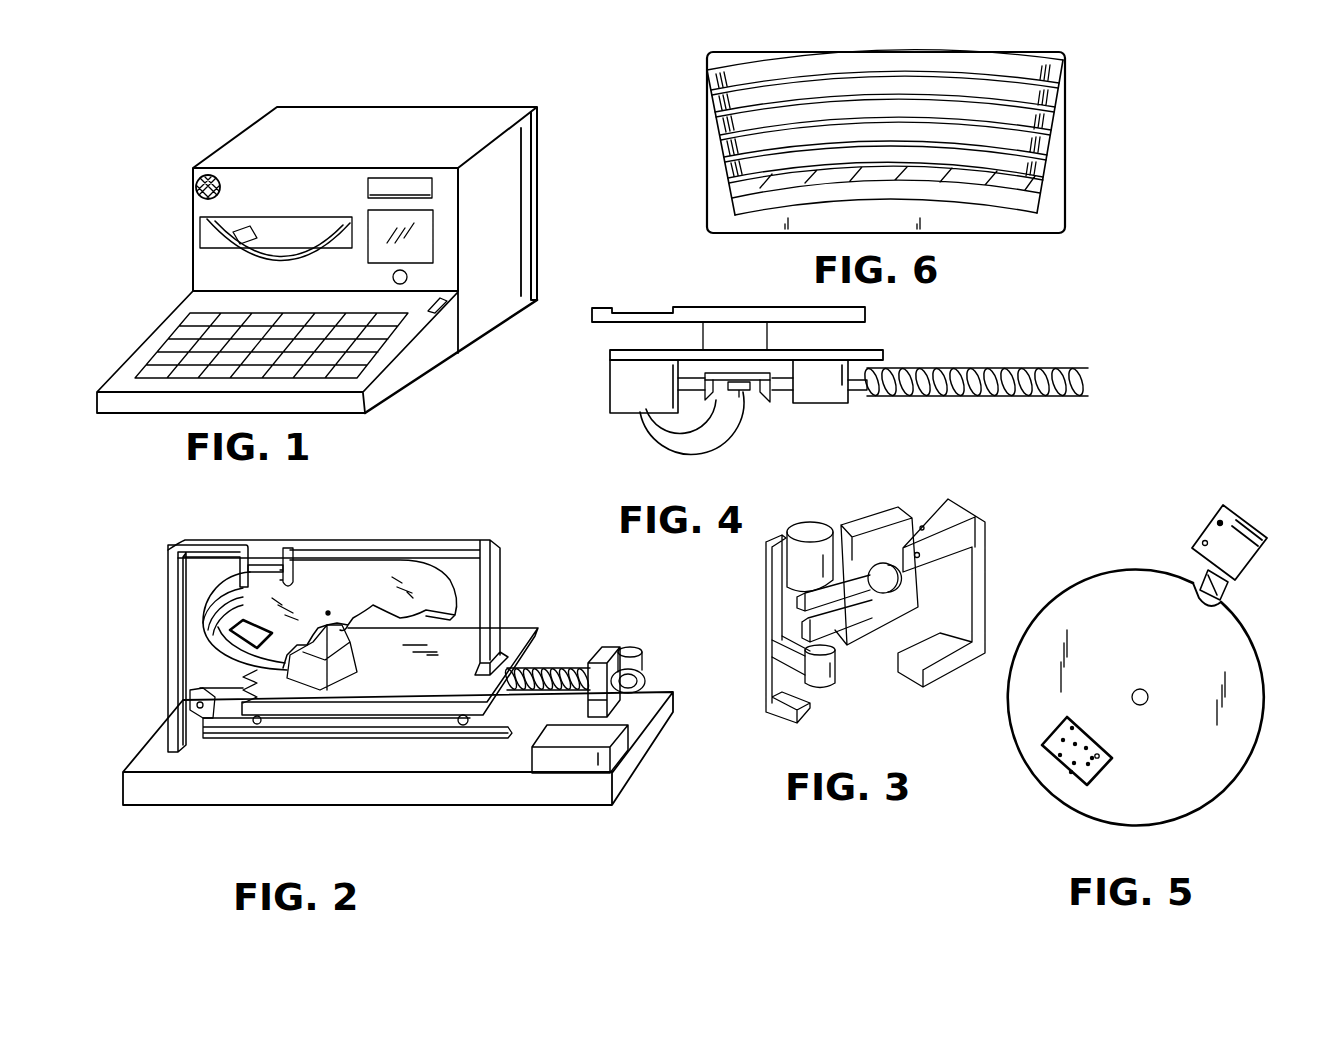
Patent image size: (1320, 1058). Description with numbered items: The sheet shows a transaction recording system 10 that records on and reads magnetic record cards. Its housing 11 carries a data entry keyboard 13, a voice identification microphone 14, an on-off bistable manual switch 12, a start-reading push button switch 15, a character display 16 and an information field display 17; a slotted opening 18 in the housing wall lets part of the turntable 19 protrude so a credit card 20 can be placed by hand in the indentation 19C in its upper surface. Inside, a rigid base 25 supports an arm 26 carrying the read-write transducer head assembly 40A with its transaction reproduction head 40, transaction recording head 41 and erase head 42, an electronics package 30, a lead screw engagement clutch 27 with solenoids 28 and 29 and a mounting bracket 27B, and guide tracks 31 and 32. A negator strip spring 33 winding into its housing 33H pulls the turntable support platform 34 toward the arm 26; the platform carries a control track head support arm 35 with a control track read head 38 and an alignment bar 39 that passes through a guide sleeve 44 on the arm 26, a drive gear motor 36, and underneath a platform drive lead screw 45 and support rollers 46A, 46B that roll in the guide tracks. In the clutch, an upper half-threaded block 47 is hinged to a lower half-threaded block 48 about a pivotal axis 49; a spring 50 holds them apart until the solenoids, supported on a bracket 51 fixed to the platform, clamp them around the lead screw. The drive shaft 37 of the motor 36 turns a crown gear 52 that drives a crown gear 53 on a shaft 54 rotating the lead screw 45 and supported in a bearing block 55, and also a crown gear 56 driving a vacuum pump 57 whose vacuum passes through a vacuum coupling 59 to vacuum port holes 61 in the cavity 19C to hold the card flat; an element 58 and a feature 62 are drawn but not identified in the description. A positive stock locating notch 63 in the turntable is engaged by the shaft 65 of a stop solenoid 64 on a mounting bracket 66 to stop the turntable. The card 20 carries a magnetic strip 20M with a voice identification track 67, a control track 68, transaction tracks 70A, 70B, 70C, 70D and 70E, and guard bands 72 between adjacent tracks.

In FIG. 1, the transaction recording system 10 is at (213, 123).
In FIG. 1, the housing 11 is at (523, 140).
In FIG. 1, the on-off bistable manual switch 12 is at (458, 297).
In FIG. 1, the data entry keyboard 13 is at (190, 337).
In FIG. 1, the voice identification input microphone 14 is at (202, 180).
In FIG. 1, the start-reading cycle push button operated switch 15 is at (408, 278).
In FIG. 1, the character display 16 is at (430, 188).
In FIG. 1, the information field display 17 is at (433, 243).
In FIG. 1, the slotted opening 18 is at (205, 223).
In FIG. 1, the turntable 19 is at (238, 240).
In FIG. 4, the turntable 19 is at (865, 313).
In FIG. 5, the turntable 19 is at (1223, 780).
In FIG. 2, the turntable 19 is at (227, 657).
In FIG. 5, the receptacle 19C is at (1073, 777).
In FIG. 2, the receptacle 19C is at (218, 650).
In FIG. 1, the credit card 20 is at (230, 240).
In FIG. 6, the credit card 20 is at (950, 223).
In FIG. 6, the magnetic coating or wide strip 20M is at (1065, 213).
In FIG. 2, the rigid base 25 is at (178, 783).
In FIG. 2, the arm 26 is at (172, 548).
In FIG. 2, the lead screw engagement clutch 27 is at (605, 650).
In FIG. 3, the mounting bracket 27B is at (983, 577).
In FIG. 2, the mounting bracket 27B is at (630, 713).
In FIG. 3, the solenoid 28 is at (805, 523).
In FIG. 2, the solenoid 28 is at (645, 657).
In FIG. 3, the solenoid 29 is at (833, 687).
In FIG. 2, the solenoid 29 is at (640, 695).
In FIG. 2, the electronics package 30 is at (592, 757).
In FIG. 2, the guide track 31 is at (393, 740).
In FIG. 2, the guide track 32 is at (540, 685).
In FIG. 2, the negator strip spring 33 is at (210, 712).
In FIG. 2, the housing 33H is at (200, 710).
In FIG. 4, the turntable support platform 34 is at (883, 355).
In FIG. 2, the turntable support platform 34 is at (523, 640).
In FIG. 2, the control track head support arm 35 is at (513, 538).
In FIG. 4, the drive gear motor 36 is at (717, 338).
In FIG. 2, the drive gear motor 36 is at (330, 673).
In FIG. 4, the drive shaft 37 is at (745, 370).
In FIG. 2, the drive shaft 37 is at (365, 577).
In FIG. 2, the control track read head 38 is at (288, 548).
In FIG. 2, the head support arm alignment bar 39 is at (265, 565).
In FIG. 2, the transaction reproduction head 40 is at (213, 592).
In FIG. 2, the read-write magnetic transducer head assembly 40A is at (210, 583).
In FIG. 2, the transaction recording head 41 is at (217, 602).
In FIG. 2, the erase head 42 is at (230, 645).
In FIG. 2, the guide sleeve 44 is at (245, 548).
In FIG. 4, the platform drive lead screw 45 is at (1060, 367).
In FIG. 2, the platform drive lead screw 45 is at (570, 668).
In FIG. 2, the support roller 46A is at (260, 724).
In FIG. 2, the support roller 46B is at (463, 727).
In FIG. 3, the half-threaded block 47 is at (877, 508).
In FIG. 3, the lower half-threaded block 48 is at (877, 640).
In FIG. 3, the pivotal axis 49 is at (953, 515).
In FIG. 3, the spring 50 is at (813, 617).
In FIG. 3, the bracket 51 is at (765, 677).
In FIG. 4, the crown gear 52 is at (750, 392).
In FIG. 4, the crown gear 53 is at (763, 394).
In FIG. 4, the shaft 54 is at (855, 388).
In FIG. 4, the bearing block 55 is at (832, 397).
In FIG. 4, the crown gear 56 is at (705, 400).
In FIG. 4, the vacuum pump 57 is at (632, 413).
In FIG. 4, the belt 58 is at (663, 440).
In FIG. 4, the vacuum coupling 59 is at (743, 395).
In FIG. 5, the vacuum port holes 61 is at (1065, 767).
In FIG. 4, the notch 62 is at (633, 308).
In FIG. 5, the positive stock locating notch 63 is at (1193, 607).
In FIG. 5, the stop solenoid 64 is at (1257, 552).
In FIG. 5, the shaft 65 is at (1223, 587).
In FIG. 5, the mounting bracket 66 is at (1217, 523).
In FIG. 6, the voice identification track 67 is at (1037, 203).
In FIG. 6, the control track 68 is at (742, 190).
In FIG. 6, the transaction track 70A is at (710, 85).
In FIG. 6, the transaction track 70B is at (712, 97).
In FIG. 6, the transaction track 70C is at (717, 122).
In FIG. 6, the transaction track 70D is at (723, 150).
In FIG. 6, the transaction track 70E is at (725, 172).
In FIG. 6, the guard bands 72 is at (1053, 163).